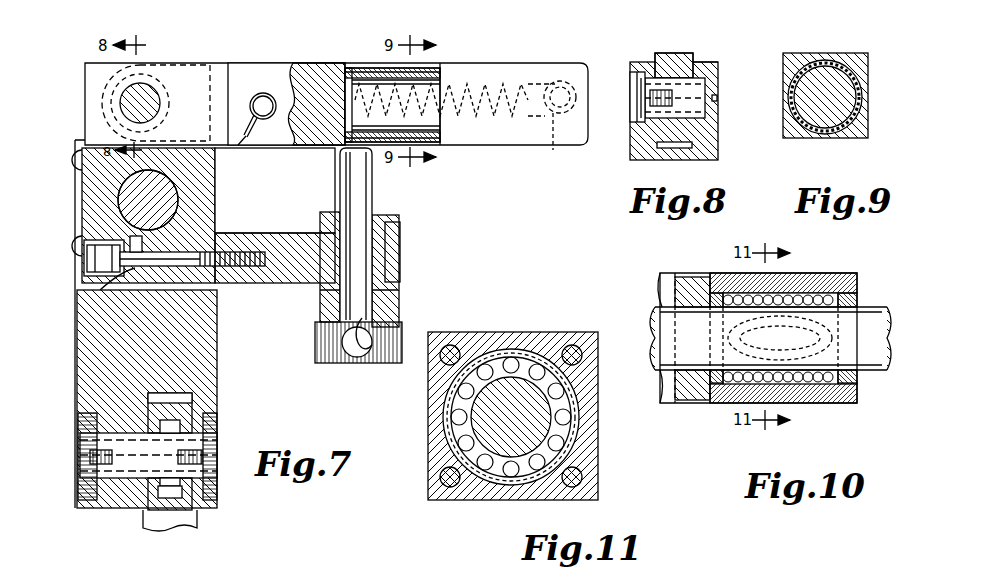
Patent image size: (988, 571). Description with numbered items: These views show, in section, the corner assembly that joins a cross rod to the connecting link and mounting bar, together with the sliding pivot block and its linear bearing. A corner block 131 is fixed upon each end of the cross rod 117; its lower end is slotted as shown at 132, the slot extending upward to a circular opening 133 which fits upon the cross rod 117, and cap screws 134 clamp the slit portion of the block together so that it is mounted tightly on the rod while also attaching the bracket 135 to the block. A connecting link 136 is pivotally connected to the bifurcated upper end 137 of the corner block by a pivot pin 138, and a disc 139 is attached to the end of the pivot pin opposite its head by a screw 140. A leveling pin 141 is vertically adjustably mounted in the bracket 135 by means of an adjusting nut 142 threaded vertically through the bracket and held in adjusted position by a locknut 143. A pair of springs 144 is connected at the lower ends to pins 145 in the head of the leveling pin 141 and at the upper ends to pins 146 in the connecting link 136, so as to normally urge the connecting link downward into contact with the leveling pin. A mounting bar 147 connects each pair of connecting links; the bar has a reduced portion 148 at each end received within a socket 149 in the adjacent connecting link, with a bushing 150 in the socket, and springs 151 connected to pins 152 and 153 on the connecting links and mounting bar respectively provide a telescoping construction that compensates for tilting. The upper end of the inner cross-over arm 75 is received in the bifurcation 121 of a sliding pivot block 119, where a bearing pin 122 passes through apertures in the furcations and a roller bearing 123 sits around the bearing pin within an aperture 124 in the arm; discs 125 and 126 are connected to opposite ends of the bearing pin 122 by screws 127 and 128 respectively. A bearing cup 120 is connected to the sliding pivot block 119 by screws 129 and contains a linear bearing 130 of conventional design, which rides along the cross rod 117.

In FIG. 7, the inner cross-over arm 75 is at (175, 528).
In FIG. 7, the cross rod 117 is at (118, 210).
In FIG. 10, the cross rod 117 is at (868, 368).
In FIG. 11, the cross rod 117 is at (487, 418).
In FIG. 7, the sliding pivot block 119 is at (175, 343).
In FIG. 10, the sliding pivot block 119 is at (698, 392).
In FIG. 10, the bearing cup 120 is at (815, 403).
In FIG. 11, the bearing cup 120 is at (543, 332).
In FIG. 7, the bifurcation 121 is at (178, 398).
In FIG. 7, the bearing pin 122 is at (132, 468).
In FIG. 7, the roller bearing 123 is at (168, 488).
In FIG. 7, the aperture 124 is at (190, 410).
In FIG. 7, the disc 125 is at (210, 428).
In FIG. 7, the disc 126 is at (85, 435).
In FIG. 7, the screw 127 is at (218, 464).
In FIG. 7, the screw 128 is at (85, 468).
In FIG. 7, the screws 129 is at (88, 150).
In FIG. 10, the screws 129 is at (668, 295).
In FIG. 11, the screws 129 is at (456, 346).
In FIG. 10, the linear bearing 130 is at (800, 283).
In FIG. 11, the linear bearing 130 is at (455, 453).
In FIG. 7, the corner block 131 is at (95, 186).
In FIG. 8, the corner block 131 is at (650, 160).
In FIG. 7, the slot 132 is at (130, 288).
In FIG. 7, the circular opening 133 is at (200, 214).
In FIG. 7, the cap screws 134 is at (100, 258).
In FIG. 7, the bracket 135 is at (264, 270).
In FIG. 7, the connecting link 136 is at (243, 63).
In FIG. 8, the connecting link 136 is at (675, 60).
In FIG. 7, the bifurcated upper end 137 is at (95, 76).
In FIG. 8, the bifurcated upper end 137 is at (700, 62).
In FIG. 7, the pivot pin 138 is at (155, 105).
In FIG. 8, the pivot pin 138 is at (690, 97).
In FIG. 8, the disc 139 is at (636, 80).
In FIG. 8, the screw 140 is at (632, 110).
In FIG. 7, the leveling pin 141 is at (360, 192).
In FIG. 7, the adjusting nut 142 is at (386, 292).
In FIG. 7, the locknut 143 is at (392, 218).
In FIG. 7, the springs 144 is at (246, 142).
In FIG. 7, the pins 145 is at (357, 355).
In FIG. 7, the pins 146 is at (266, 99).
In FIG. 7, the mounting bar 147 is at (515, 63).
In FIG. 9, the mounting bar 147 is at (850, 53).
In FIG. 7, the reduced portion 148 is at (362, 80).
In FIG. 9, the reduced portion 148 is at (810, 100).
In FIG. 7, the socket 149 is at (352, 70).
In FIG. 9, the socket 149 is at (803, 138).
In FIG. 7, the bushing 150 is at (432, 68).
In FIG. 9, the bushing 150 is at (848, 138).
In FIG. 7, the springs 151 is at (490, 112).
In FIG. 7, the pins 152 is at (330, 110).
In FIG. 7, the pins 153 is at (554, 143).